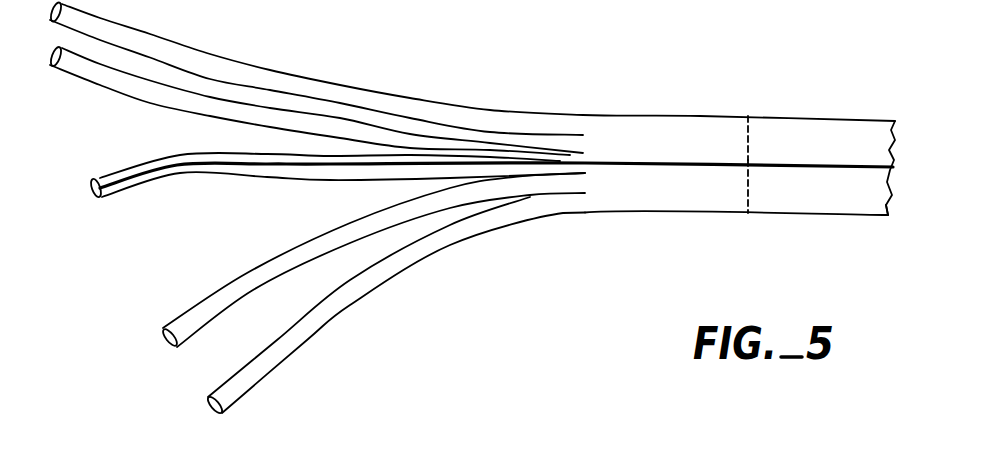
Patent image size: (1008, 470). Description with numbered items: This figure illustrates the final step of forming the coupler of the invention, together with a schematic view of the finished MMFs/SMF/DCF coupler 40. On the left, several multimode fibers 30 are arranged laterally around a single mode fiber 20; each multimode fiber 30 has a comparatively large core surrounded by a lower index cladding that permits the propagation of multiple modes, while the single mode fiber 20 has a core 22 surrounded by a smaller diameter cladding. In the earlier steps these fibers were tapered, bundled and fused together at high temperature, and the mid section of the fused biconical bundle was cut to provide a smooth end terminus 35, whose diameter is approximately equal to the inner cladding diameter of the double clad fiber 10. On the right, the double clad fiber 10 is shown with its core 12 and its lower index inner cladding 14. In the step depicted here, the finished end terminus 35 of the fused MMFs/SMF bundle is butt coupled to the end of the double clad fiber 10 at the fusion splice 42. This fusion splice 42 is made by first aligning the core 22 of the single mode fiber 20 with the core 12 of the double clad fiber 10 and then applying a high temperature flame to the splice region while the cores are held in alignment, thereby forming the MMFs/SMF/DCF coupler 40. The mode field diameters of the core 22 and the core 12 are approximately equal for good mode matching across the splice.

The double clad fiber 10 is at (824, 104).
The core 12 is at (834, 167).
The inner cladding 14 is at (815, 195).
The single mode fiber 20 is at (133, 187).
The core 22 is at (178, 162).
The multimode fiber 30 is at (162, 52).
The end terminus 35 is at (750, 192).
The MMFs/SMF/DCF coupler 40 is at (685, 88).
The fusion splice 42 is at (748, 133).